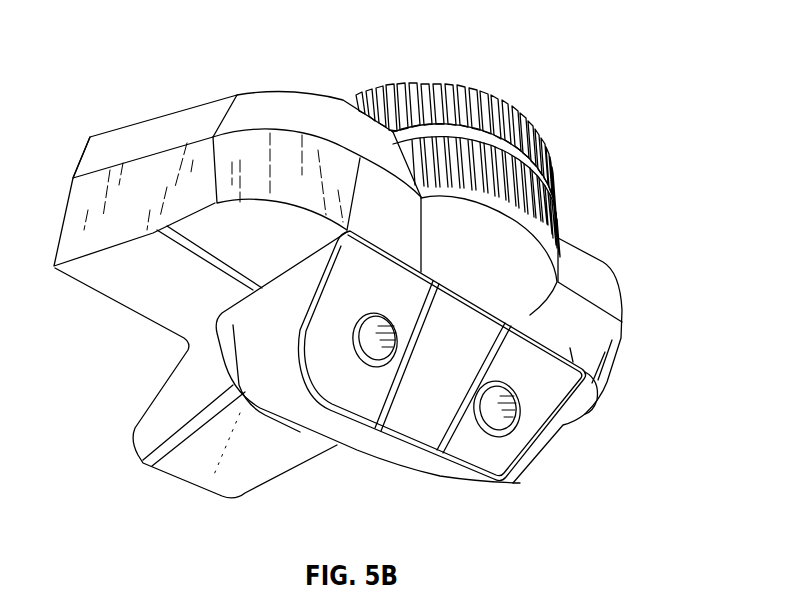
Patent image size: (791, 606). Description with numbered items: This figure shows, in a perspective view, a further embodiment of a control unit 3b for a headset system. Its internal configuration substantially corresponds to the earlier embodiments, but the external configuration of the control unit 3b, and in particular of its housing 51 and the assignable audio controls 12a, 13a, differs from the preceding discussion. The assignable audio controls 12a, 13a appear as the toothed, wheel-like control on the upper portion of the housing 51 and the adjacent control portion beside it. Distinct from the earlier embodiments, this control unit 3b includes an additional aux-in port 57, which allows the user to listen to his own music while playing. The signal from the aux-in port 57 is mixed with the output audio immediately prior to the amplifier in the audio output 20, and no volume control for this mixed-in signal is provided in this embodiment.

The control unit 3b is at (621, 93).
The housing 51 is at (147, 157).
The assignable audio control 12a is at (490, 102).
The assignable audio control 13a is at (557, 228).
The audio output 20 is at (512, 417).
The aux-in port 57 is at (372, 330).